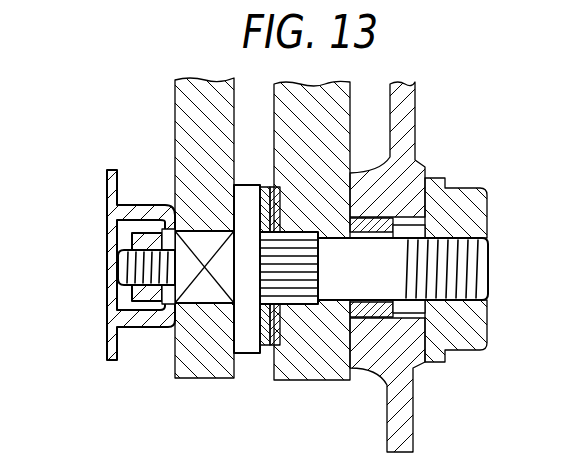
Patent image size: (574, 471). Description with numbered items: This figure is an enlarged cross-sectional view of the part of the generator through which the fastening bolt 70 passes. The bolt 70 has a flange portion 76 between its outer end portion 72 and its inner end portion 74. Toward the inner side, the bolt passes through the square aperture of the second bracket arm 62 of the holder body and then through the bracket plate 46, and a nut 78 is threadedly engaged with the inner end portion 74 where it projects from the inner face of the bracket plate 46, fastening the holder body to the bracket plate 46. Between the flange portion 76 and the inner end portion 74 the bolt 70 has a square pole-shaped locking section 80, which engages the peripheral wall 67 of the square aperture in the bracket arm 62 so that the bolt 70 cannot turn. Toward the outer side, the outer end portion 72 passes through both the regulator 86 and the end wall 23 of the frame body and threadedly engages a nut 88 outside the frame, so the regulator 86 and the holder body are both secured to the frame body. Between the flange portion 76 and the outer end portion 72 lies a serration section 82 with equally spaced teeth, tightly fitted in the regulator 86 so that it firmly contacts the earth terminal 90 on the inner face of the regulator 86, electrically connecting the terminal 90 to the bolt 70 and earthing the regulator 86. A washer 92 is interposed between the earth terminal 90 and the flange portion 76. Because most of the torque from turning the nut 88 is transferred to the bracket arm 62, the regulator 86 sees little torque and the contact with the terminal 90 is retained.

The end wall 23 is at (414, 395).
The bracket plate 46 is at (107, 348).
The second bracket arm 62 is at (180, 378).
The peripheral wall 67 is at (205, 232).
The fastening bolt 70 is at (349, 282).
The outer end portion 72 is at (480, 273).
The inner end portion 74 is at (118, 268).
The flange portion 76 is at (243, 353).
The nut 78 is at (130, 242).
The locking section 80 is at (200, 293).
The serration section 82 is at (316, 262).
The regulator 86 is at (333, 381).
The nut 88 is at (487, 330).
The earth terminal 90 is at (278, 346).
The washer 92 is at (265, 347).